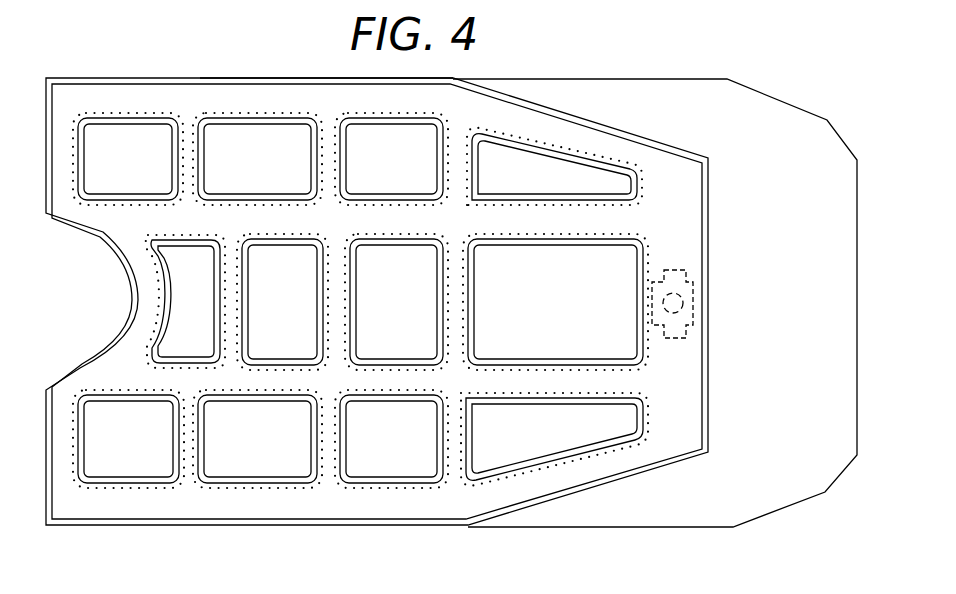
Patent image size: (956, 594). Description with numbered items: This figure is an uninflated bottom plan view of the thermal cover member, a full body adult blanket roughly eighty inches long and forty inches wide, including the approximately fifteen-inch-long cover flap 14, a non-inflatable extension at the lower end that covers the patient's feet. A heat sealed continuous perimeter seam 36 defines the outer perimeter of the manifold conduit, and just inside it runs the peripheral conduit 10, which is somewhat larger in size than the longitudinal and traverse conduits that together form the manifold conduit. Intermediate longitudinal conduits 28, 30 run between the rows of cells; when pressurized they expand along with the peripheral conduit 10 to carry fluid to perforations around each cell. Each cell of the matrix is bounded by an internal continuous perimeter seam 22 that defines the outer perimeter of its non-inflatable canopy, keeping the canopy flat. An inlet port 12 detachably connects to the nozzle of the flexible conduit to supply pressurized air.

The peripheral manifold conduit 10 is at (227, 503).
The inlet port 12 is at (692, 277).
The cover flap 14 is at (758, 458).
The continuous sealed perimeter seam 22 is at (167, 232).
The intermediate longitudinal conduit 28 is at (538, 220).
The intermediate longitudinal conduit 30 is at (607, 378).
The heat sealed continuous perimeter seam 36 is at (278, 78).